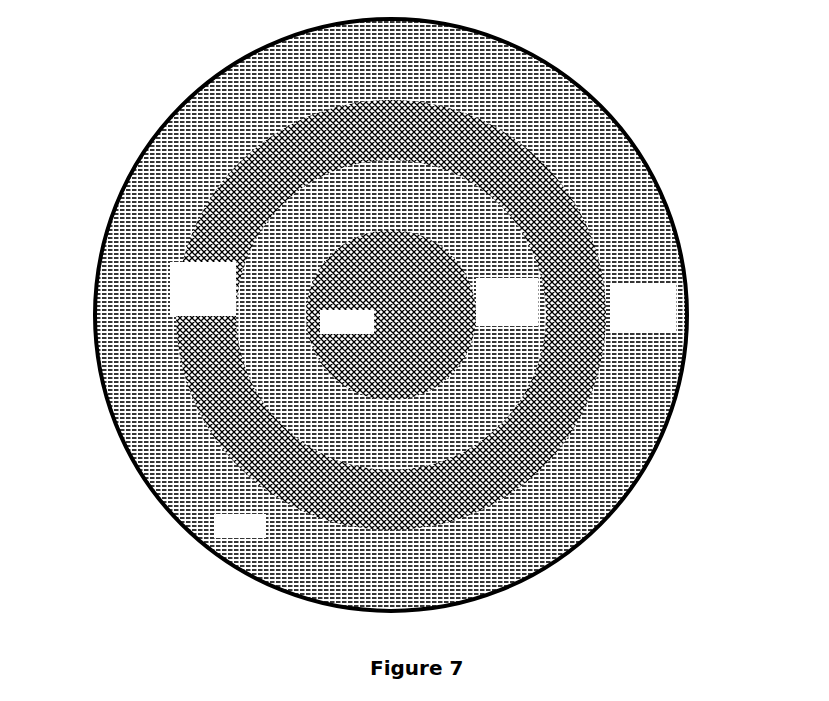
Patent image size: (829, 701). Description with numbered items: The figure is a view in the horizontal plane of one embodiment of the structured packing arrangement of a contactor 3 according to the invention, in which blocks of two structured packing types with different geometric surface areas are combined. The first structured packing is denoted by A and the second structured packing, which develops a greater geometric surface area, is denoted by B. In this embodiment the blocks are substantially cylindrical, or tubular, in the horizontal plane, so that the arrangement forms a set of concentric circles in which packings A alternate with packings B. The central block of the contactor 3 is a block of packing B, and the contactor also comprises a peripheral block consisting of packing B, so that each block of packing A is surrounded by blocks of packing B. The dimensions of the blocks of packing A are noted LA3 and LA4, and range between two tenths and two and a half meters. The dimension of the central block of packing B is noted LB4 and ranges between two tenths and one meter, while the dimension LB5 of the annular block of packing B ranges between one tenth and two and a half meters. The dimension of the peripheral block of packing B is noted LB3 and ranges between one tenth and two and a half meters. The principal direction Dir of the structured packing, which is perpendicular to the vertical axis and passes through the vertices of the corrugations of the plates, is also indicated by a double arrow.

The shaped fibre cross-section 3 is at (450, 315).
The first structured packing A is at (424, 315).
The second structured packing B is at (528, 464).
The dimension of block of packing A LA3 is at (536, 318).
The dimension of block of packing A LA4 is at (667, 325).
The dimension of peripheral block LB3 is at (179, 509).
The dimension of block of packing B LB4 is at (387, 234).
The dimension of block of packing B LB5 is at (227, 308).
The principal direction Dir is at (195, 597).